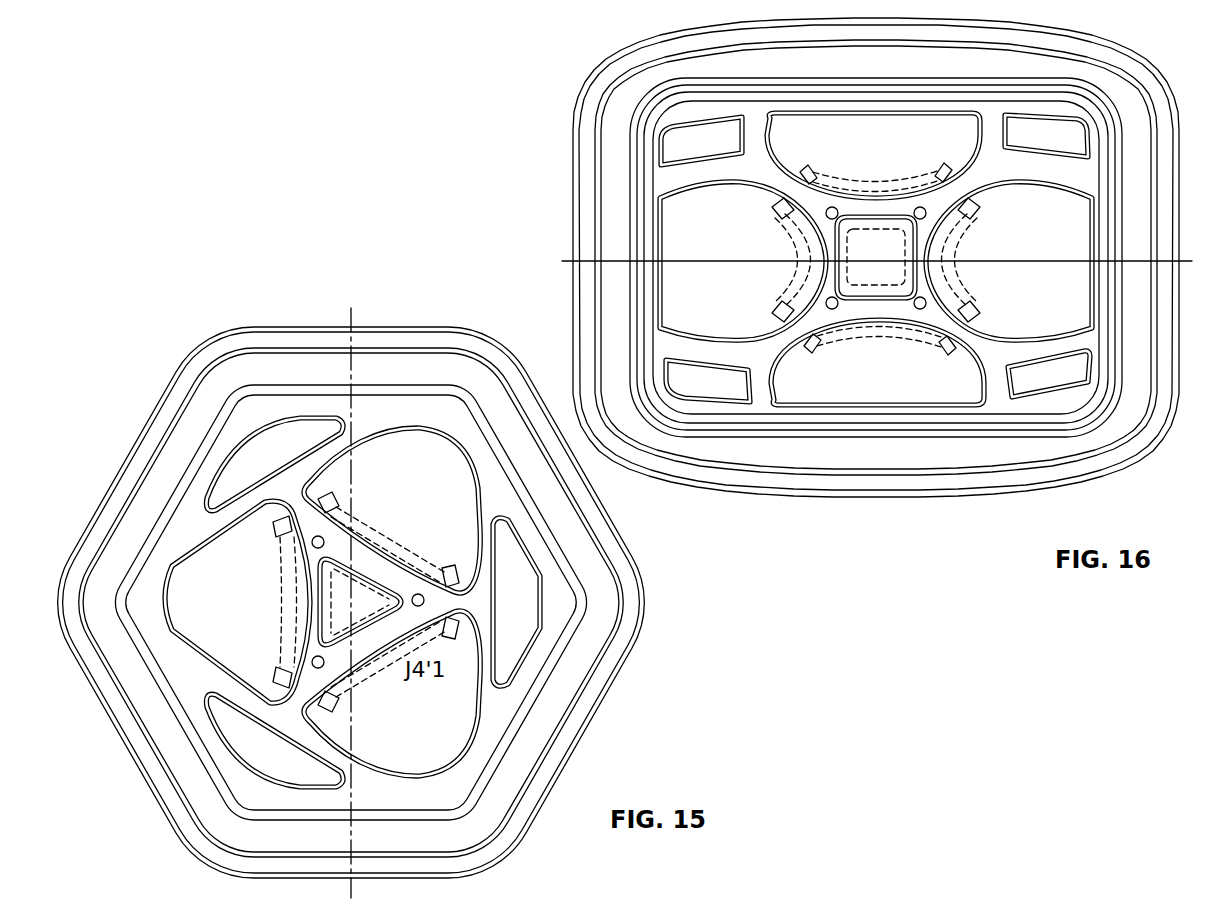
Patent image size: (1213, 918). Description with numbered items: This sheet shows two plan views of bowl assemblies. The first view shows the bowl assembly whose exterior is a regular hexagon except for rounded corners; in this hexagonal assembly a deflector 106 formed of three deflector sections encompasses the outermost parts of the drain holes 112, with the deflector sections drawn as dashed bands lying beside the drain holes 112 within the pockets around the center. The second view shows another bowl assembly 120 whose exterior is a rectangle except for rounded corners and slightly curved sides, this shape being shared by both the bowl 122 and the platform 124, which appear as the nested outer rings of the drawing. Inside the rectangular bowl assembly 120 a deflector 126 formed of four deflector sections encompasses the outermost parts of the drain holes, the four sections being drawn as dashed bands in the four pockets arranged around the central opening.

In FIG. 15, the deflector 106 is at (417, 550).
In FIG. 15, the drain holes 112 is at (420, 597).
In FIG. 16, the bowl assembly 120 is at (837, 257).
In FIG. 16, the bowl 122 is at (572, 137).
In FIG. 16, the platform 124 is at (628, 184).
In FIG. 16, the deflector 126 is at (777, 213).